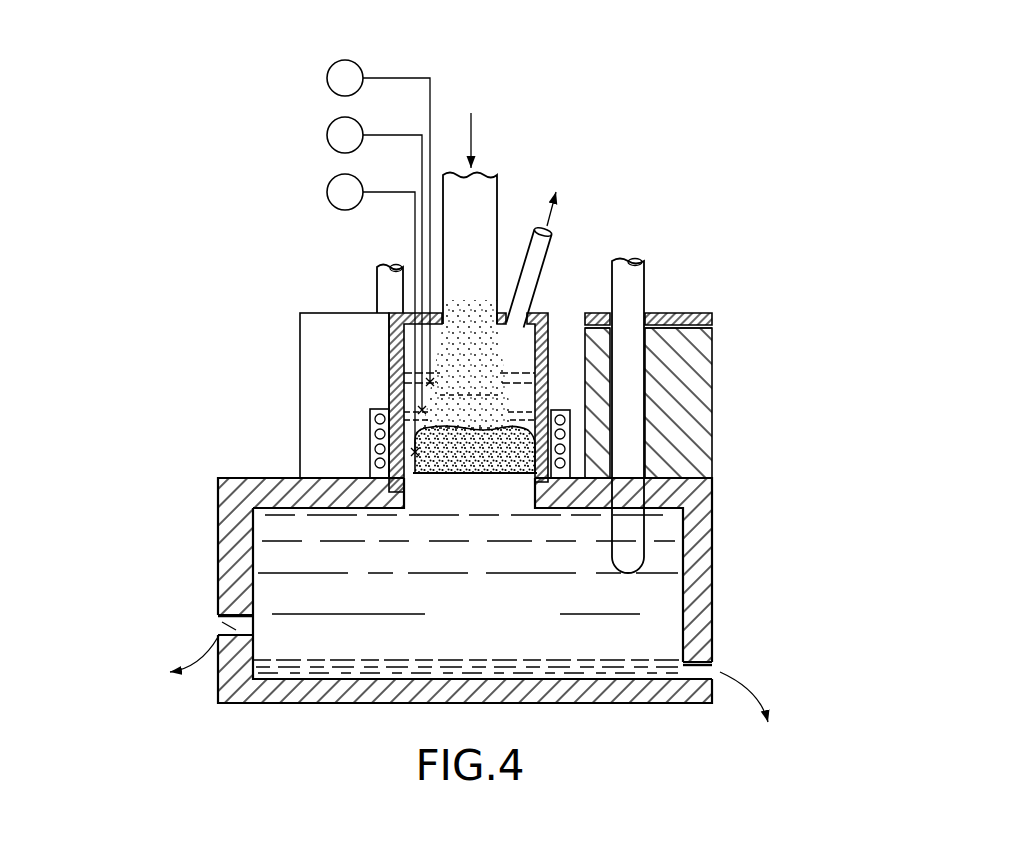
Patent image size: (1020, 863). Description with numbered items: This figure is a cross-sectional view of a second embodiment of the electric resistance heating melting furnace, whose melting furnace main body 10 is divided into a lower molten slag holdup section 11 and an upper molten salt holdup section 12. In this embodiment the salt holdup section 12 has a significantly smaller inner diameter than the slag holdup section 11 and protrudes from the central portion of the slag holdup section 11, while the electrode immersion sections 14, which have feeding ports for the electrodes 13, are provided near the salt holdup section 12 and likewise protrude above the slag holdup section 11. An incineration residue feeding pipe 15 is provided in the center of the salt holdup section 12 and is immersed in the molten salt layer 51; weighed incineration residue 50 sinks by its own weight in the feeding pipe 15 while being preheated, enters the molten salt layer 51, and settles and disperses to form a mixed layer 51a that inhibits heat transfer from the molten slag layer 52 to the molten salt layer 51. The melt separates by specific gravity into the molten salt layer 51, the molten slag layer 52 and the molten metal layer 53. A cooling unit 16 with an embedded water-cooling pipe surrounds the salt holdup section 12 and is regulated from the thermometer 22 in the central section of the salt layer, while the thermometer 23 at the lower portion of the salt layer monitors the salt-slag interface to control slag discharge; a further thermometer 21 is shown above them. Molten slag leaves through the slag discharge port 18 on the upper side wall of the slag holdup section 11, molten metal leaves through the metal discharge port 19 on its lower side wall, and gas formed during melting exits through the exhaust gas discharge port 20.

The melting furnace main body 10 is at (208, 492).
The molten slag holdup section 11 is at (218, 548).
The molten salt holdup section 12 is at (395, 352).
The electrode 13 is at (388, 285).
The electrode immersion section 14 is at (300, 358).
The incineration residue feeding pipe 15 is at (497, 182).
The cooling unit 16 is at (370, 437).
The slag discharge port 18 is at (218, 619).
The metal discharge port 19 is at (712, 665).
The exhaust gas discharge port 20 is at (543, 262).
The first thermocouple T1 21 is at (330, 68).
The thermometer 22 is at (330, 125).
The thermometer 23 is at (330, 182).
The incineration residue 50 is at (460, 342).
The molten salt layer 51 is at (520, 393).
The mixed layer 51a is at (458, 447).
The molten slag layer 52 is at (437, 608).
The molten metal layer 53 is at (350, 667).